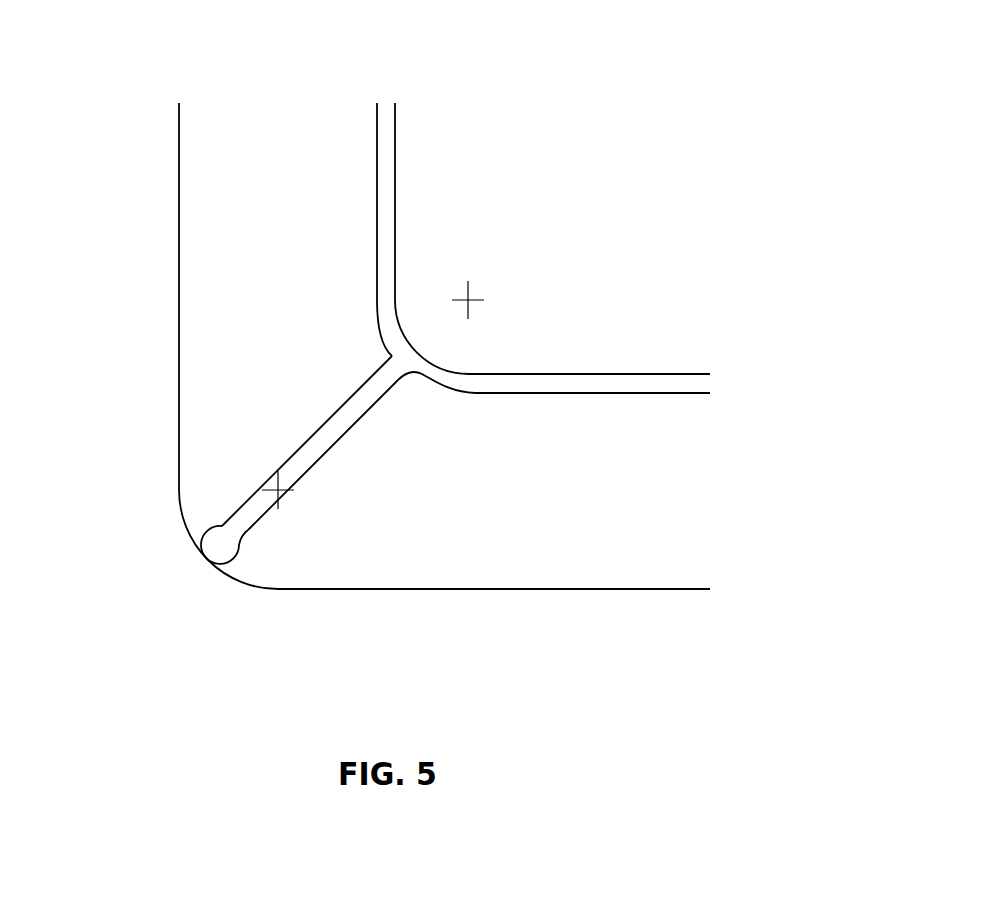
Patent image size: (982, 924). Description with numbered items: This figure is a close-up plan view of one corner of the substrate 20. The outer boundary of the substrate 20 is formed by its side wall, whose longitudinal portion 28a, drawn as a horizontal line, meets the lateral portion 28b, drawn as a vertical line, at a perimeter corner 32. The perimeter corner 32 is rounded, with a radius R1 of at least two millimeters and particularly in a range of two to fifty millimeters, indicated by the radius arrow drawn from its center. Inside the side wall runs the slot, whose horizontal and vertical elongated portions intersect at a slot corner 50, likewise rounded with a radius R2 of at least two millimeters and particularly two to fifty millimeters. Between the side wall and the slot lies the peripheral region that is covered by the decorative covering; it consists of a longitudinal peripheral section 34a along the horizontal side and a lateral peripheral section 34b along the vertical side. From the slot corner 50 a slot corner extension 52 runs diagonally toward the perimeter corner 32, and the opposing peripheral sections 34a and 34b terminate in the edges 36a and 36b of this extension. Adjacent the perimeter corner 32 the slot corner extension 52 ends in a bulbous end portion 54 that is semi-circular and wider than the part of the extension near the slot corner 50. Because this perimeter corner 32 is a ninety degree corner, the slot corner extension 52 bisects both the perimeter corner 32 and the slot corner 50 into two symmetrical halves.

The substrate 20 is at (676, 147).
The longitudinal portion of the side wall 28a is at (548, 590).
The lateral portion of the side wall 28b is at (179, 290).
The perimeter corner 32 is at (187, 582).
The longitudinal peripheral section 34a is at (703, 507).
The lateral peripheral section 34b is at (300, 168).
The edge of the slot corner extension 36a is at (360, 423).
The edge of the slot corner extension 36b is at (348, 407).
The slot corner 50 is at (412, 360).
The slot corner extension 52 is at (345, 422).
The bulbous end portion 54 is at (215, 538).
The radius of the perimeter corner R1 is at (278, 490).
The radius of the slot corner R2 is at (468, 300).